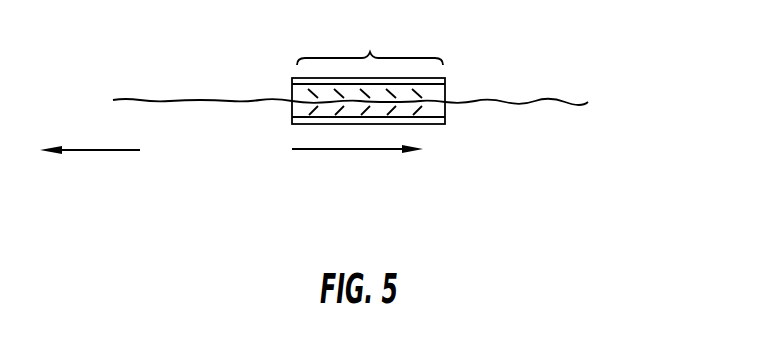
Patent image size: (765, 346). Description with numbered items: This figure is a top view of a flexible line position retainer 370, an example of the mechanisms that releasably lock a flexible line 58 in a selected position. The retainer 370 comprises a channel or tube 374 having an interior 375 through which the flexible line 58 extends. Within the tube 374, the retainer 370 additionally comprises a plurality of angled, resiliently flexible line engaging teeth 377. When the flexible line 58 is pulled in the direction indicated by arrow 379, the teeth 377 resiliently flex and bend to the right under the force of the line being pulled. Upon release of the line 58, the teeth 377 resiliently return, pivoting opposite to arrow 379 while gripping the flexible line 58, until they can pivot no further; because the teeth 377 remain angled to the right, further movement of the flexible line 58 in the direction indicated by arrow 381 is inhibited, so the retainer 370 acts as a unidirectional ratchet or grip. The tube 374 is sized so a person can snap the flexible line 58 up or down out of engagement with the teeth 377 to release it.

The flexible line 58 is at (574, 99).
The retainer 370 is at (246, 76).
The tube 374 is at (311, 124).
The interior 375 is at (447, 92).
The angled resiliently flexible line engaging teeth 377 is at (420, 107).
The arrow 379 is at (365, 150).
The arrow 381 is at (98, 150).